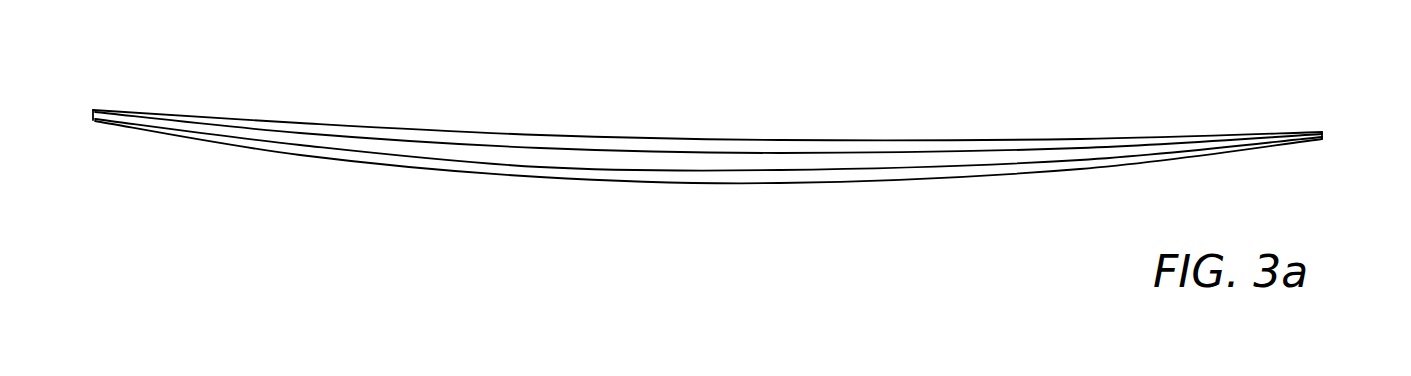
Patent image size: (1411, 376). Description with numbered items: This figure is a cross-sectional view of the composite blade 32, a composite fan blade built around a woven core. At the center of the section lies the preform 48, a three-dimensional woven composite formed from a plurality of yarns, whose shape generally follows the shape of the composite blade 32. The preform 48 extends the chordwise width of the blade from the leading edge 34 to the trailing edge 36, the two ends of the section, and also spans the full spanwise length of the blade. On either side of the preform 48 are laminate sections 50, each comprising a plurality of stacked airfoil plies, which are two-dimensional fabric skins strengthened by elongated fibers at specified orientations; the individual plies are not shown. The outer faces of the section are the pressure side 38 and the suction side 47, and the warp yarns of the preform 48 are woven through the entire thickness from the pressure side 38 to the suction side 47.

The composite blade 32 is at (436, 109).
The leading edge 34 is at (1324, 134).
The trailing edge 36 is at (92, 115).
The pressure side 38 is at (1010, 138).
The suction side 47 is at (1028, 170).
The preform 48 is at (588, 160).
The laminate sections 50 is at (757, 147).